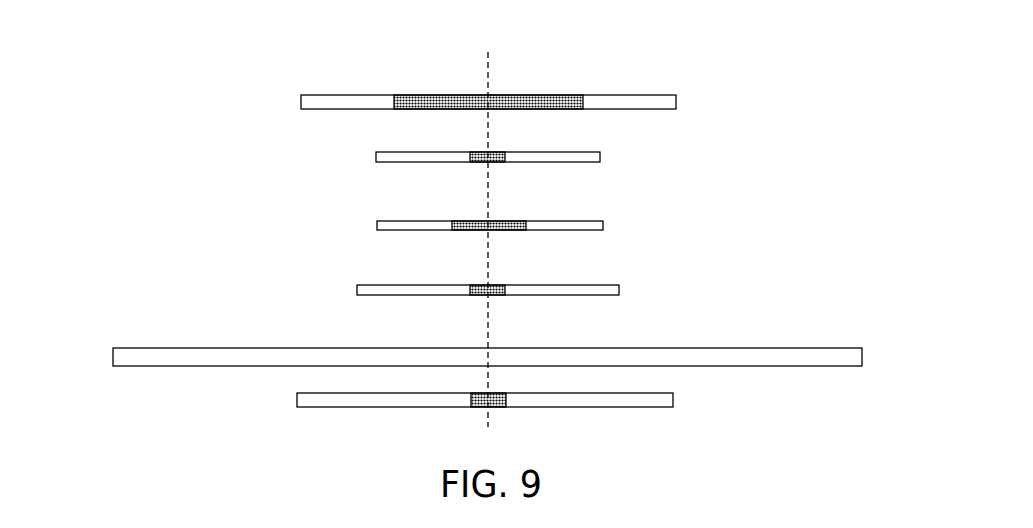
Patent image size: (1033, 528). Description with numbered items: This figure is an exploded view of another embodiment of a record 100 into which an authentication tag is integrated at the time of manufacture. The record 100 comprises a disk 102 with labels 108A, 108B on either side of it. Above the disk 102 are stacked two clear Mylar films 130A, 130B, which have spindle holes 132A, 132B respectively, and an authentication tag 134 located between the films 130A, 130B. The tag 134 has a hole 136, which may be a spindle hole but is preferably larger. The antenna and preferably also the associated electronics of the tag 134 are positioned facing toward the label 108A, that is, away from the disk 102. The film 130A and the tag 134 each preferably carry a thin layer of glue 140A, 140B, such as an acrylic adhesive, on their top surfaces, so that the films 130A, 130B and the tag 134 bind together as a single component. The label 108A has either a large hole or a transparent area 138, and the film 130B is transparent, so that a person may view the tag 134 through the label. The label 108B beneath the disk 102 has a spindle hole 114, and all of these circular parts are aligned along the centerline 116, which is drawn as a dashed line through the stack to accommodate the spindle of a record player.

The record 100 is at (125, 199).
The disk 102 is at (220, 348).
The label 108A is at (676, 102).
The label 108B is at (567, 407).
The spindle hole 114 is at (482, 410).
The centerline 116 is at (486, 218).
The clear Mylar film 130A is at (619, 288).
The clear Mylar film 130B is at (600, 157).
The spindle hole 132A is at (476, 284).
The spindle hole 132B is at (476, 151).
The authentication tag 134 is at (603, 224).
The hole 136 is at (476, 220).
The transparent area 138 is at (451, 93).
The layer of glue 140A is at (570, 281).
The layer of glue 140B is at (575, 217).